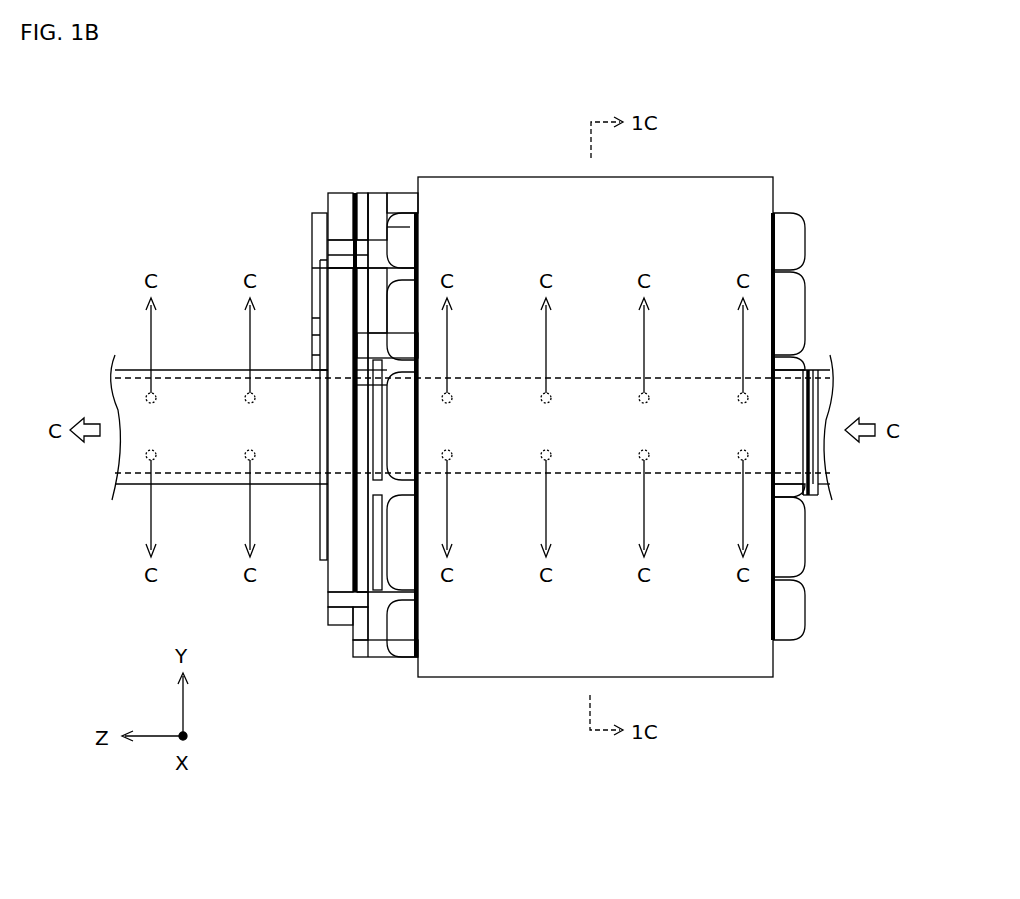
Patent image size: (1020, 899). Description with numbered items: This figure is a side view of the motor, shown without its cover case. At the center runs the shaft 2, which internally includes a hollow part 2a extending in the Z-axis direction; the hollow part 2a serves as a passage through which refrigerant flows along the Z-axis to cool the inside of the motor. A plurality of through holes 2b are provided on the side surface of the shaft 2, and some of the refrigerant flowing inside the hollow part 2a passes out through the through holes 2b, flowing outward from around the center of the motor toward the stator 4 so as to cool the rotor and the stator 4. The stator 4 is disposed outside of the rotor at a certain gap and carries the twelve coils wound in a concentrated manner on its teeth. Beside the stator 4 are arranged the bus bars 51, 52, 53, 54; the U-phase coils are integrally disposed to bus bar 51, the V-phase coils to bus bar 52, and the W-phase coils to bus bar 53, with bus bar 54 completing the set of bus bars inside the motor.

The shaft 2 is at (123, 383).
The hollow part 2a is at (200, 395).
The through holes 2b is at (250, 460).
The stator 4 is at (443, 190).
The bus bar 51 is at (370, 188).
The bus bar 52 is at (348, 409).
The bus bar 53 is at (370, 425).
The bus bar 54 is at (365, 425).